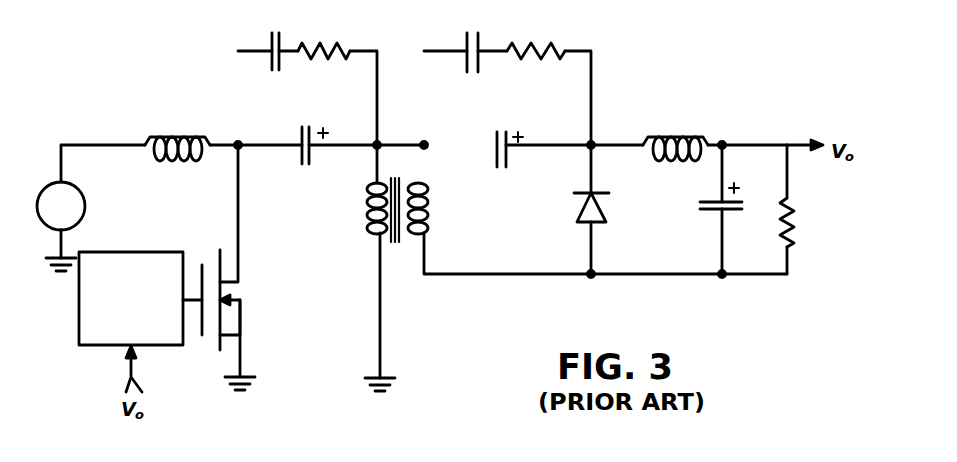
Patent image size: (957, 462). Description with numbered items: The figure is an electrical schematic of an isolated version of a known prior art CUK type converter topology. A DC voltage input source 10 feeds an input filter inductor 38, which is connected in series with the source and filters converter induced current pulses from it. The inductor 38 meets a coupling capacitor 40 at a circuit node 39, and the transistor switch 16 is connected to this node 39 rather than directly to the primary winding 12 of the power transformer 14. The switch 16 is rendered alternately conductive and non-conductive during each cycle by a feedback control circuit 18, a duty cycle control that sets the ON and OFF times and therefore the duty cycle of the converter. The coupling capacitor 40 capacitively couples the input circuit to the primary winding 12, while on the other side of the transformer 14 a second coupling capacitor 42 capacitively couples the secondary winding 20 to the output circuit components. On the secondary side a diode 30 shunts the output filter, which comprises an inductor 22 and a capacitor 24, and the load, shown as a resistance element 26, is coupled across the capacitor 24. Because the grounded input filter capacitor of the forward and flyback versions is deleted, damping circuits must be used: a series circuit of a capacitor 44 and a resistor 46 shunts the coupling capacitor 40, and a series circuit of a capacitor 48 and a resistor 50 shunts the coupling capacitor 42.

The DC voltage input source 10 is at (85, 200).
The primary winding 12 is at (368, 212).
The power transformer 14 is at (403, 257).
The transistor switch 16 is at (241, 290).
The feedback control circuit 18 is at (80, 306).
The secondary winding 20 is at (430, 212).
The inductor 22 is at (676, 140).
The capacitor 24 is at (702, 203).
The load 26 is at (793, 220).
The diode 30 is at (583, 208).
The inductor 38 is at (173, 135).
The circuit node 39 is at (240, 143).
The coupling capacitor 40 is at (310, 126).
The coupling capacitor 42 is at (504, 130).
The capacitor 44 is at (277, 33).
The resistor 46 is at (327, 47).
The capacitor 48 is at (476, 33).
The resistor 50 is at (538, 47).